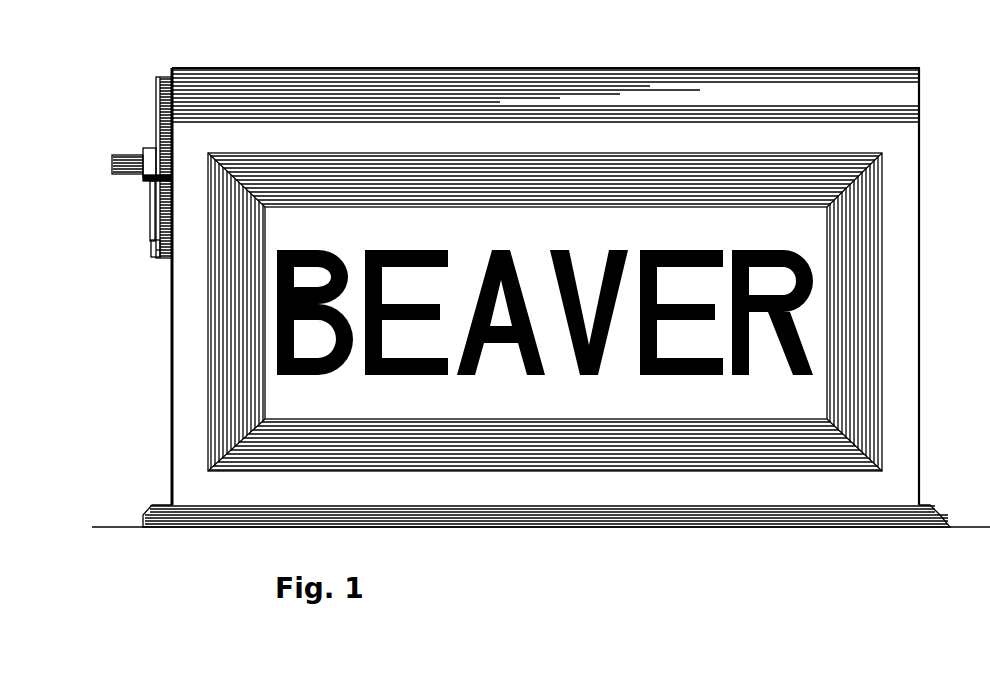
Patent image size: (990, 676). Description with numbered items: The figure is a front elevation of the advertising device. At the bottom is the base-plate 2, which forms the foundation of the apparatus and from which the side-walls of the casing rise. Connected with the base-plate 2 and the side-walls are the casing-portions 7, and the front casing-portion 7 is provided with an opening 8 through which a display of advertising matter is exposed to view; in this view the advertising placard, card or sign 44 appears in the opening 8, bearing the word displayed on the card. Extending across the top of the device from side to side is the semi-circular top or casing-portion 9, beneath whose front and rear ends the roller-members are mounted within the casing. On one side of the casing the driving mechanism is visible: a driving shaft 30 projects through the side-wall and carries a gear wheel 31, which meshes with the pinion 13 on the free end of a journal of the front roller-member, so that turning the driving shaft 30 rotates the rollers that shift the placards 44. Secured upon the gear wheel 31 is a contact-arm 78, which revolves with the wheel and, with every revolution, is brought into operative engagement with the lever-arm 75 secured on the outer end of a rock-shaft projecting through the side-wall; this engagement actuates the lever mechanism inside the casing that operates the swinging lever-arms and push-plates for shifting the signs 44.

The base-plate 2 is at (157, 508).
The casing-portions 7 is at (545, 286).
The opening 8 is at (265, 388).
The semi-circular top or casing-portion 9 is at (317, 77).
The pinion 13 is at (156, 180).
The driving shaft 30 is at (130, 160).
The gear wheel 31 is at (165, 258).
The advertising placards, cards or signs 44 is at (545, 328).
The lever-arm 75 is at (153, 250).
The contact-arm 78 is at (157, 145).